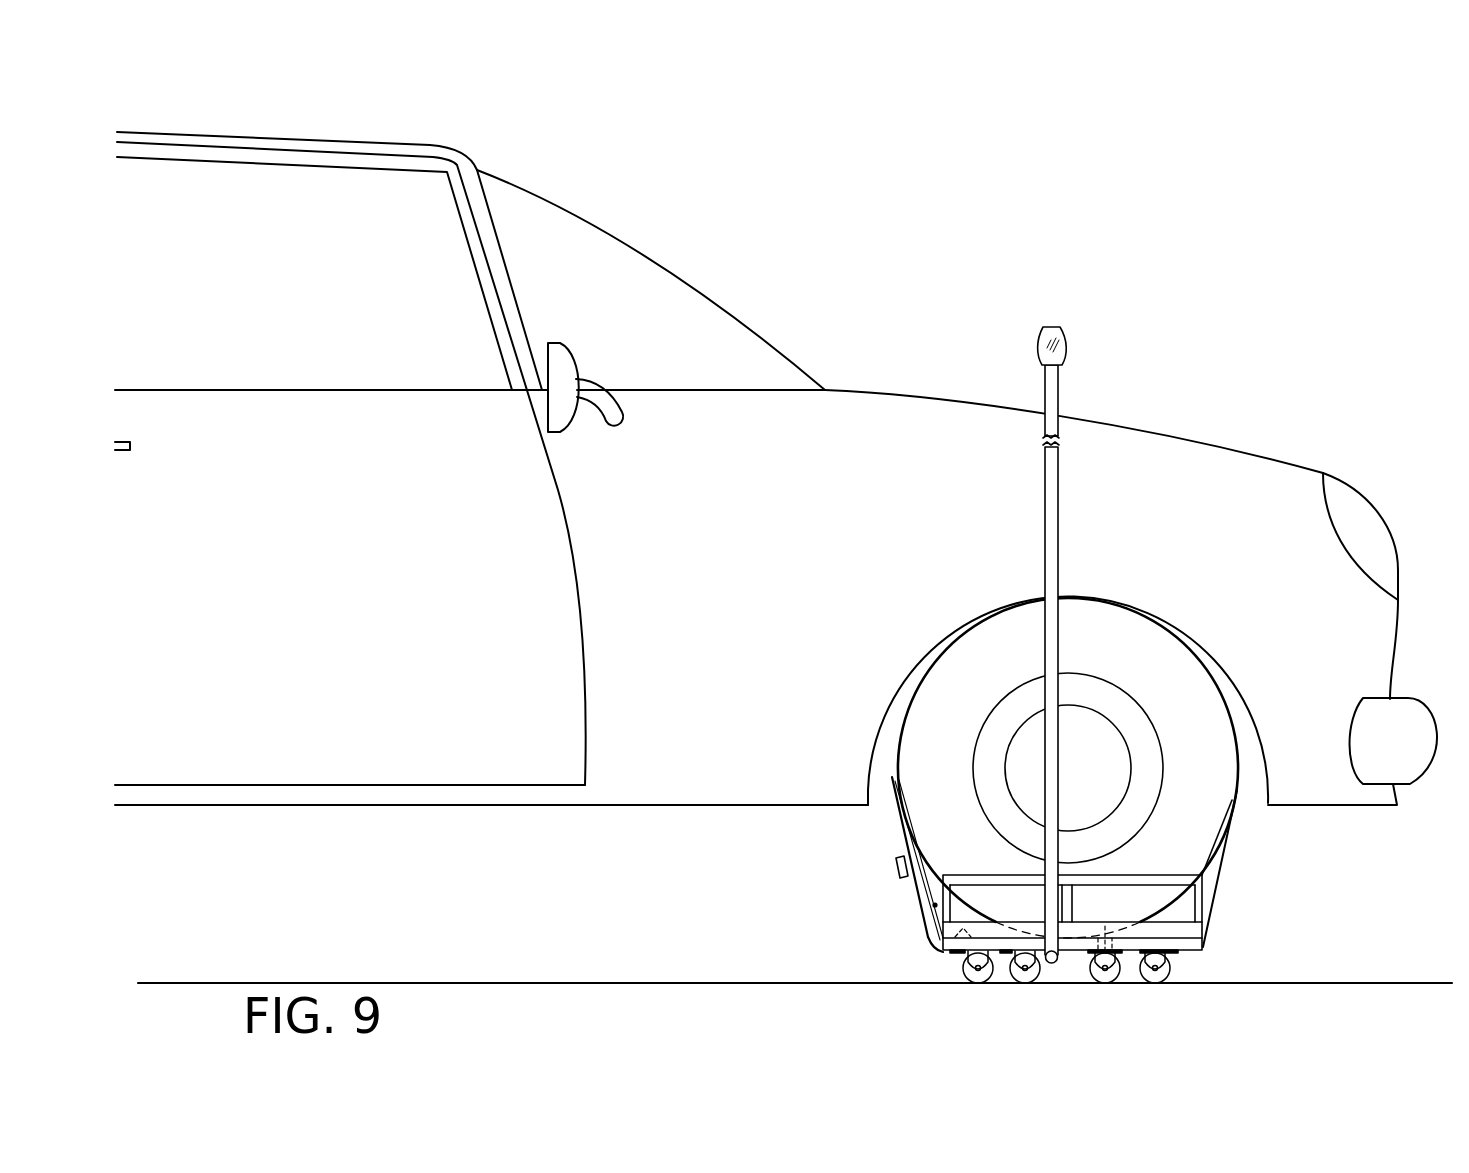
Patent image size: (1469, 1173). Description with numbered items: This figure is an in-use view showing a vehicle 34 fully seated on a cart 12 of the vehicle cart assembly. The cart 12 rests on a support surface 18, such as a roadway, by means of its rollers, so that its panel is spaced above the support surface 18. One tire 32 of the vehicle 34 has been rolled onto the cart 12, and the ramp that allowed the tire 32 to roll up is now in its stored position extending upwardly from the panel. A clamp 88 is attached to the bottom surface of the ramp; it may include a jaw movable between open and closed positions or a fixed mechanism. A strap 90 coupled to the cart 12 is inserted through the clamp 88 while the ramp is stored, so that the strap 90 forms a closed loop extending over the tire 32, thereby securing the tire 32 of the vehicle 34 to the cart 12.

The cart 12 is at (1102, 692).
The support surface 18 is at (1390, 983).
The tire 32 is at (1162, 663).
The vehicle 34 is at (1223, 338).
The clamp 88 is at (905, 868).
The strap 90 is at (1217, 888).